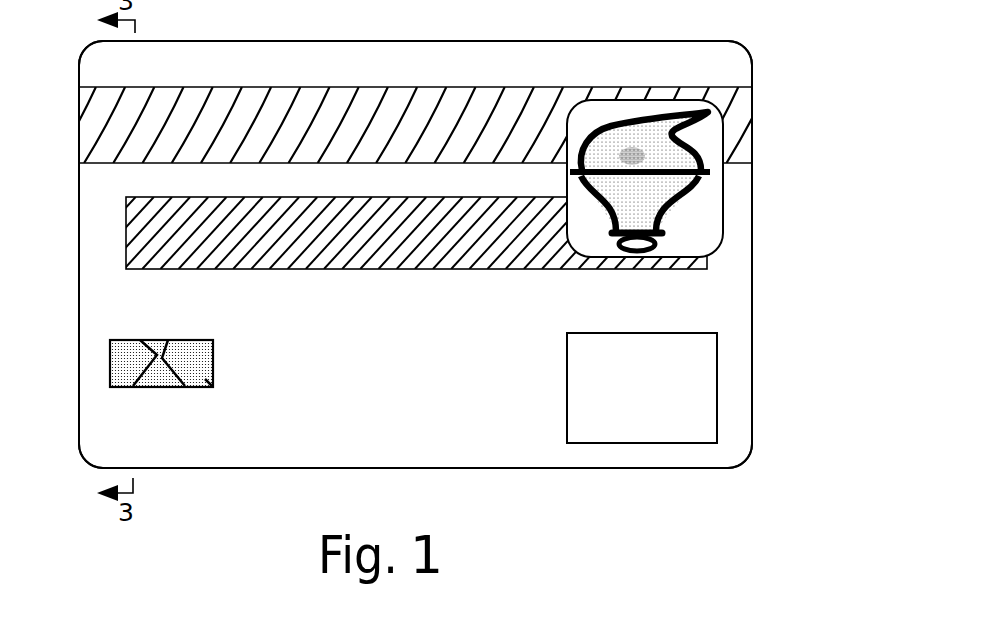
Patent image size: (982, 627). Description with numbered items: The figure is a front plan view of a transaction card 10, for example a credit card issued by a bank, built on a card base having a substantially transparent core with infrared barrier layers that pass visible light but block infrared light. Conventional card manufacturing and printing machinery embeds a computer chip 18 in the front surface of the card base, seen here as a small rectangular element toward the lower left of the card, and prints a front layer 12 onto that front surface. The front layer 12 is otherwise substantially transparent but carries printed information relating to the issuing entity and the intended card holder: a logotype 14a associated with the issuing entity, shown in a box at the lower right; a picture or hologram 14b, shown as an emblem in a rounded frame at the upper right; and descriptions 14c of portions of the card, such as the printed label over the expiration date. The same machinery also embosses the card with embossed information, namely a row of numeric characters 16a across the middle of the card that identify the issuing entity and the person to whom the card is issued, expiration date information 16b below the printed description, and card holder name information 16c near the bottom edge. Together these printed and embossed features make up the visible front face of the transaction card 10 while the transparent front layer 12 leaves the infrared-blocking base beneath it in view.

The transaction card 10 is at (788, 131).
The front layer 12 is at (722, 297).
The logotype 14a is at (707, 392).
The picture or hologram 14b is at (713, 207).
The descriptions of portions of the card 14c is at (493, 362).
The numeric characters 16a is at (147, 321).
The expiration date information 16b is at (432, 388).
The card holder name information 16c is at (157, 413).
The computer chip 18 is at (125, 361).